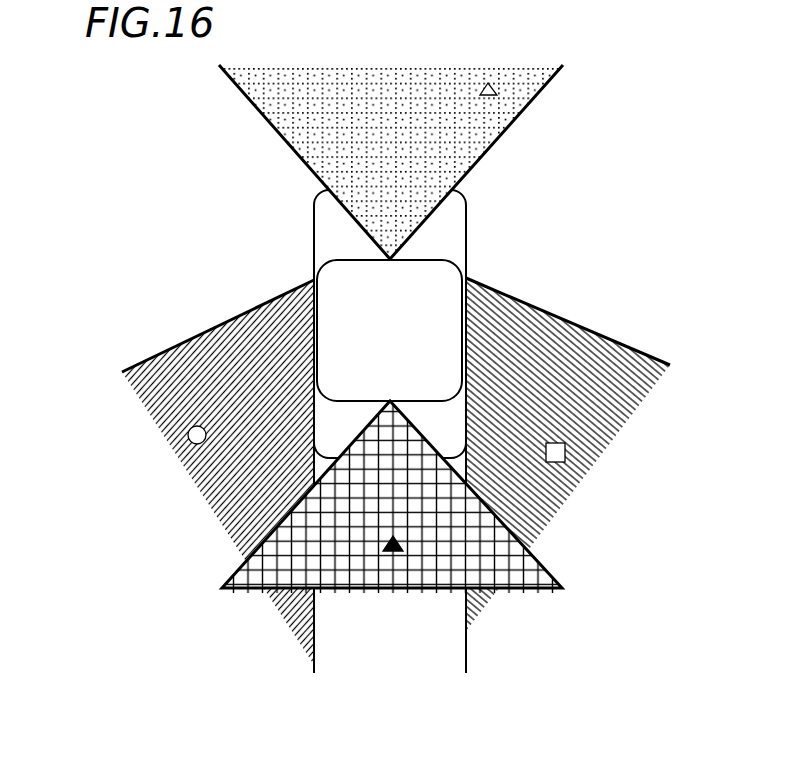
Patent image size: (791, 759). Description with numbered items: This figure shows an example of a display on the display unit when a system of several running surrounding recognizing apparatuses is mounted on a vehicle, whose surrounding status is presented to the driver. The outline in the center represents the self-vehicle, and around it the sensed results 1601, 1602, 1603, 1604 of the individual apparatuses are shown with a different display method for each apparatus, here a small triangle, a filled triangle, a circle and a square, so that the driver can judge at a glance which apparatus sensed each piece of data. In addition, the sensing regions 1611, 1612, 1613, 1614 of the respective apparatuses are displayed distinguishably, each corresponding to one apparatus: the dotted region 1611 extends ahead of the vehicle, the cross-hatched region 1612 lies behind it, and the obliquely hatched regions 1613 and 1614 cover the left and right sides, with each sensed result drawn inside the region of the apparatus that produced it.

The sensed result 1601 is at (489, 81).
The sensed result 1602 is at (393, 552).
The sensed result 1603 is at (188, 437).
The sensed result 1604 is at (565, 462).
The sensing region 1611 is at (510, 125).
The sensing region 1612 is at (553, 575).
The sensing region 1613 is at (178, 346).
The sensing region 1614 is at (555, 317).